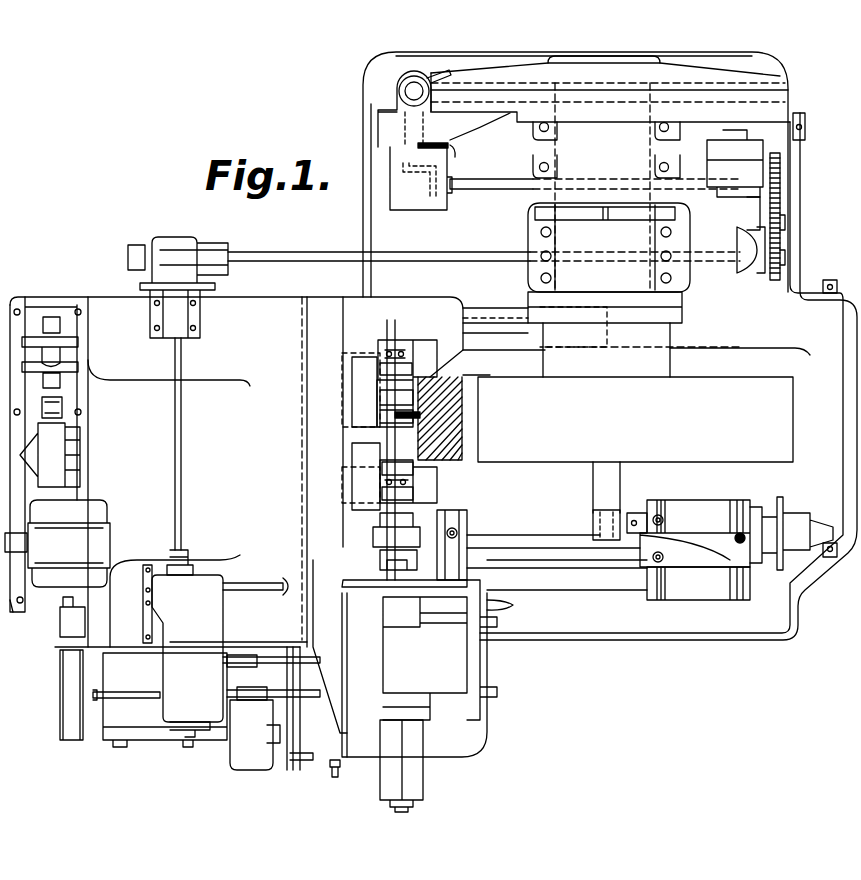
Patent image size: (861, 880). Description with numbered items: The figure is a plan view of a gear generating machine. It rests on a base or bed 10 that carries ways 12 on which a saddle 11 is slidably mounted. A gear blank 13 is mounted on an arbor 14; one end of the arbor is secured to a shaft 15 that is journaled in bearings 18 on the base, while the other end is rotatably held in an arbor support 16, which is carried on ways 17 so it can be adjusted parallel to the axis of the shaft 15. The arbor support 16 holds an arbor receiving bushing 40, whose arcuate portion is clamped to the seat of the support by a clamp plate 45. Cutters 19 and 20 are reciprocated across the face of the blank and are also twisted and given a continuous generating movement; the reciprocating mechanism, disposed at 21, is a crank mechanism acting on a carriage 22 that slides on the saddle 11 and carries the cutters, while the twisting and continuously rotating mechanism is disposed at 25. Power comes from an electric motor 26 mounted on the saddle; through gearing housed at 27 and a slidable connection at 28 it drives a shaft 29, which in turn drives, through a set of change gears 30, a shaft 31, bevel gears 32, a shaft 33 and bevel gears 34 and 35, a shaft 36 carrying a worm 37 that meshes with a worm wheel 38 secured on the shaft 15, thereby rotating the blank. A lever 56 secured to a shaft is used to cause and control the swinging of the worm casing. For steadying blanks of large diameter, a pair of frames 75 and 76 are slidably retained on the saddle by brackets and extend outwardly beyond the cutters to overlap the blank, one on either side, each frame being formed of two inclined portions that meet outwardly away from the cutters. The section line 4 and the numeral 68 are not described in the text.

The section line 4- 4 is at (352, 84).
The base 10 is at (307, 507).
The saddle 11 is at (124, 456).
The ways 12 is at (292, 281).
The gear blank 13 is at (646, 424).
The arbor 14 is at (598, 490).
The shaft 15 is at (562, 198).
The arbor support 16 is at (697, 520).
The ways 17 is at (652, 590).
The bearings 18 is at (660, 287).
The cutter 19 is at (420, 415).
The cutter 20 is at (355, 474).
The reciprocating mechanism 21 is at (278, 717).
The carriage 22 is at (321, 760).
The twisting and rotating mechanism 25 is at (433, 680).
The electric motor 26 is at (55, 556).
The gearing 27 is at (197, 598).
The slidable connection 28 is at (177, 250).
The shaft 29 is at (320, 258).
The change gears 30 is at (772, 213).
The shaft 31 is at (498, 185).
The bevel gears 32 is at (423, 196).
The shaft 33 is at (410, 162).
The bevel gear 34 is at (393, 117).
The bevel gear 35 is at (404, 78).
The shaft 36 is at (416, 83).
The worm 37 is at (442, 75).
The worm wheel 38 is at (492, 90).
The arbor receiving bushing 40 is at (598, 522).
The clamp plate 45 is at (637, 515).
The lever 56 is at (452, 150).
The drive pulley 68 is at (745, 170).
The frame 75 is at (433, 486).
The frame 76 is at (432, 345).